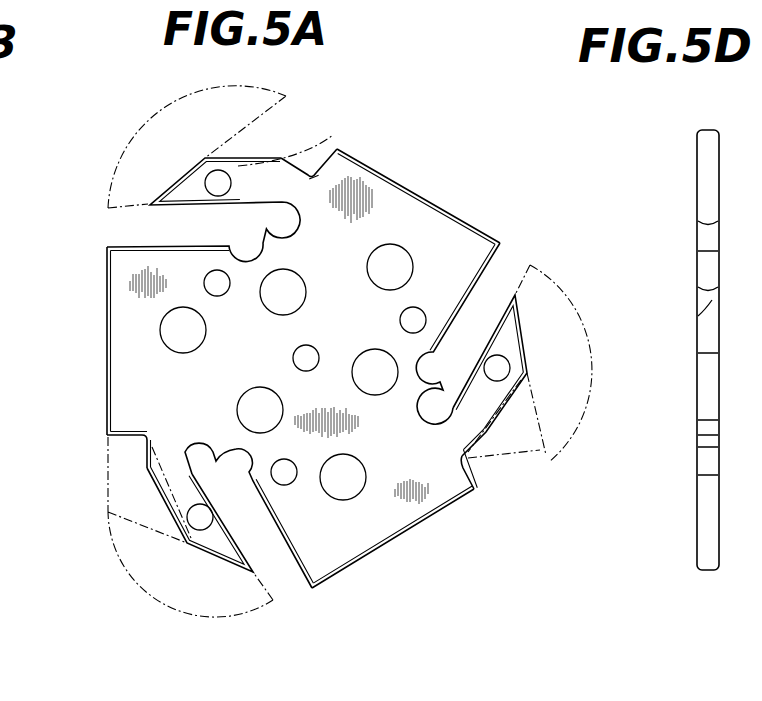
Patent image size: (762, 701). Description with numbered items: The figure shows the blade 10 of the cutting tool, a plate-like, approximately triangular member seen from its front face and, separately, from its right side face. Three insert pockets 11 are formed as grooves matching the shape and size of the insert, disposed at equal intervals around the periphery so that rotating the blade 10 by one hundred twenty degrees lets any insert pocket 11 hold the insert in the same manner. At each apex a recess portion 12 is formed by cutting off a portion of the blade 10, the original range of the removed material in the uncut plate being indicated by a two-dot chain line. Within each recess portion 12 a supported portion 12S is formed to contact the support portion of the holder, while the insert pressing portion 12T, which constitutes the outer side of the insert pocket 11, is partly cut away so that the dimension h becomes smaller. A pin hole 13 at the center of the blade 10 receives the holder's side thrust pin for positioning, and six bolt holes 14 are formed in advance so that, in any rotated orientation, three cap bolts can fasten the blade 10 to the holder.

In FIG. 5A, the blade 10 is at (68, 186).
In FIG. 5D, the blade 10 is at (650, 164).
In FIG. 5A, the insert pocket 11 is at (196, 238).
In FIG. 5D, the insert pocket 11 is at (682, 239).
In FIG. 5A, the recess portion 12 is at (290, 95).
In FIG. 5A, the insert pressing portion 12T is at (188, 193).
In FIG. 5D, the insert pressing portion 12T is at (697, 310).
In FIG. 5A, the supported portion 12S is at (127, 442).
In FIG. 5A, the pin hole 13 is at (312, 350).
In FIG. 5A, the bolt hole 14 is at (290, 278).